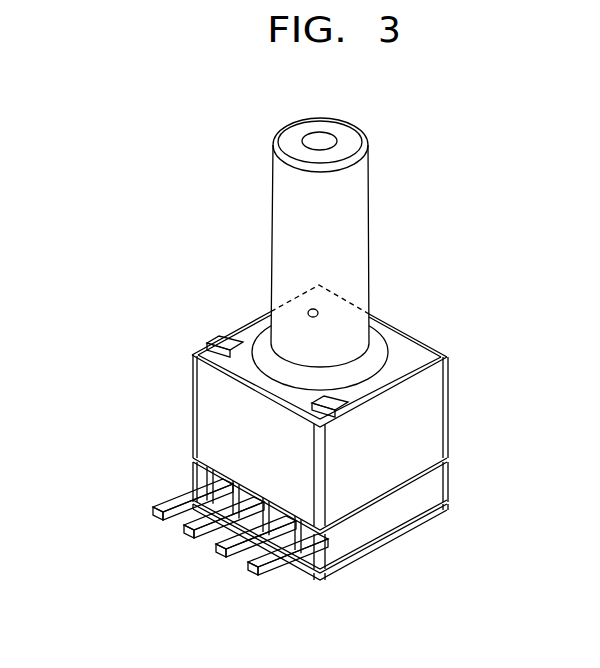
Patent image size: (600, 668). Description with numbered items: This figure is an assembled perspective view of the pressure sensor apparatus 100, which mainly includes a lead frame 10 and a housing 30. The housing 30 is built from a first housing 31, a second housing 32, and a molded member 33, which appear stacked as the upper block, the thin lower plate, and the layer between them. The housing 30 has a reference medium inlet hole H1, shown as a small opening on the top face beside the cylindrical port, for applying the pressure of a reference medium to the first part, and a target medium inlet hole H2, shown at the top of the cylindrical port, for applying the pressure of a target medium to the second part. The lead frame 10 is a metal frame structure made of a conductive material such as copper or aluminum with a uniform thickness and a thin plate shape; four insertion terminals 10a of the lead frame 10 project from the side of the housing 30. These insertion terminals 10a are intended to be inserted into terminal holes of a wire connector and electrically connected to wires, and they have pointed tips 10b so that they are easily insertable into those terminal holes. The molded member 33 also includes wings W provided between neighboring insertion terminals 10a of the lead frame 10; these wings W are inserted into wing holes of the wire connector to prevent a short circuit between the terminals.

The pressure sensor apparatus 100 is at (458, 157).
The housing 30 is at (518, 405).
The first housing 31 is at (438, 422).
The molded member 33 is at (438, 478).
The second housing 32 is at (438, 513).
The lead frame 10 is at (133, 595).
The insertion terminals 10a is at (254, 568).
The pointed tips 10b is at (155, 507).
The wings W is at (208, 480).
The reference medium inlet hole H1 is at (308, 312).
The target medium inlet hole H2 is at (320, 140).